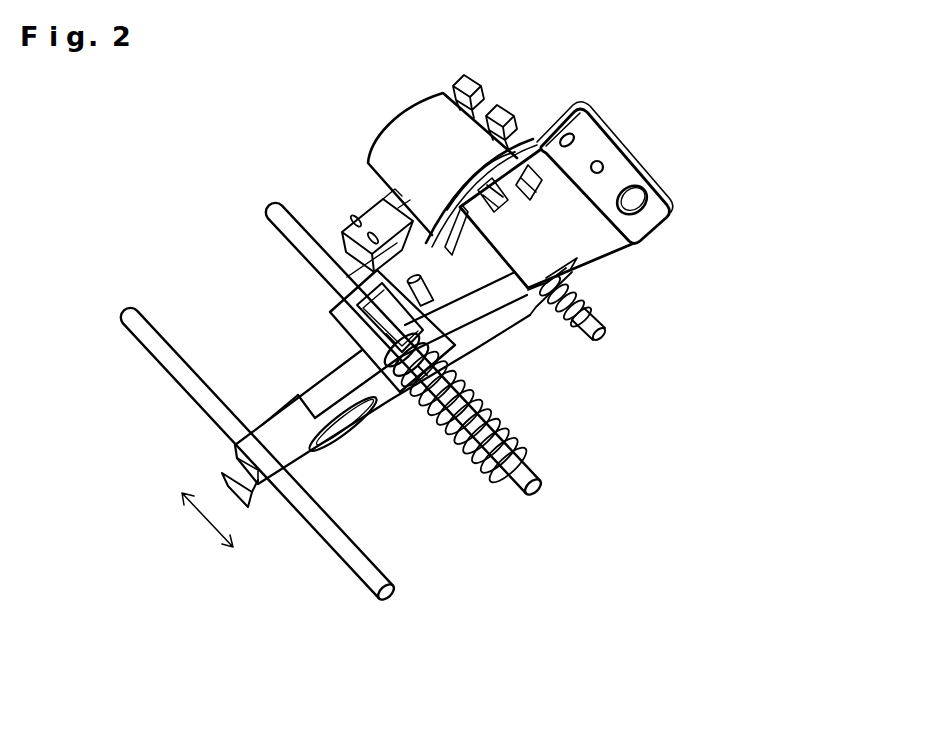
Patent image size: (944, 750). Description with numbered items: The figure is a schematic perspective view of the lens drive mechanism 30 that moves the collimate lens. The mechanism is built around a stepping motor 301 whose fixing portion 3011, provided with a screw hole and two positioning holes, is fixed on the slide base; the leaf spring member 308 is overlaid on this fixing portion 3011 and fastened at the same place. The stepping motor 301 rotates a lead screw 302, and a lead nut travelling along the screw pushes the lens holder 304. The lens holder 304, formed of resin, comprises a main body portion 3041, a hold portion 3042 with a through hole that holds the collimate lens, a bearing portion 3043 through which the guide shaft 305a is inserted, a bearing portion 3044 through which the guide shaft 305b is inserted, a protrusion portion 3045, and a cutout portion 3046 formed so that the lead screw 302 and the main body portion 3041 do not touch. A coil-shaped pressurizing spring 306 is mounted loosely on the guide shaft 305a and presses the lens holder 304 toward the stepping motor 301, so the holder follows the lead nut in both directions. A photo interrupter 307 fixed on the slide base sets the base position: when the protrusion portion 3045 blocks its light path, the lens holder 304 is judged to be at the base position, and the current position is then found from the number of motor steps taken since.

The lens drive mechanism 30 is at (197, 151).
The stepping motor 301 is at (399, 119).
The fixing portion 3011 is at (582, 105).
The lead screw 302 is at (593, 302).
The lens holder 304 is at (266, 367).
The main body portion 3041 is at (342, 365).
The hold portion 3042 is at (338, 457).
The bearing portion 3043 is at (343, 298).
The bearing portion 3044 is at (227, 487).
The protrusion portion 3045 is at (435, 293).
The cutout portion 3046 is at (542, 308).
The guide shaft 305a is at (540, 492).
The guide shaft 305b is at (385, 601).
The pressurizing spring 306 is at (520, 433).
The photo interrupter 307 is at (373, 219).
The leaf spring member 308 is at (589, 212).